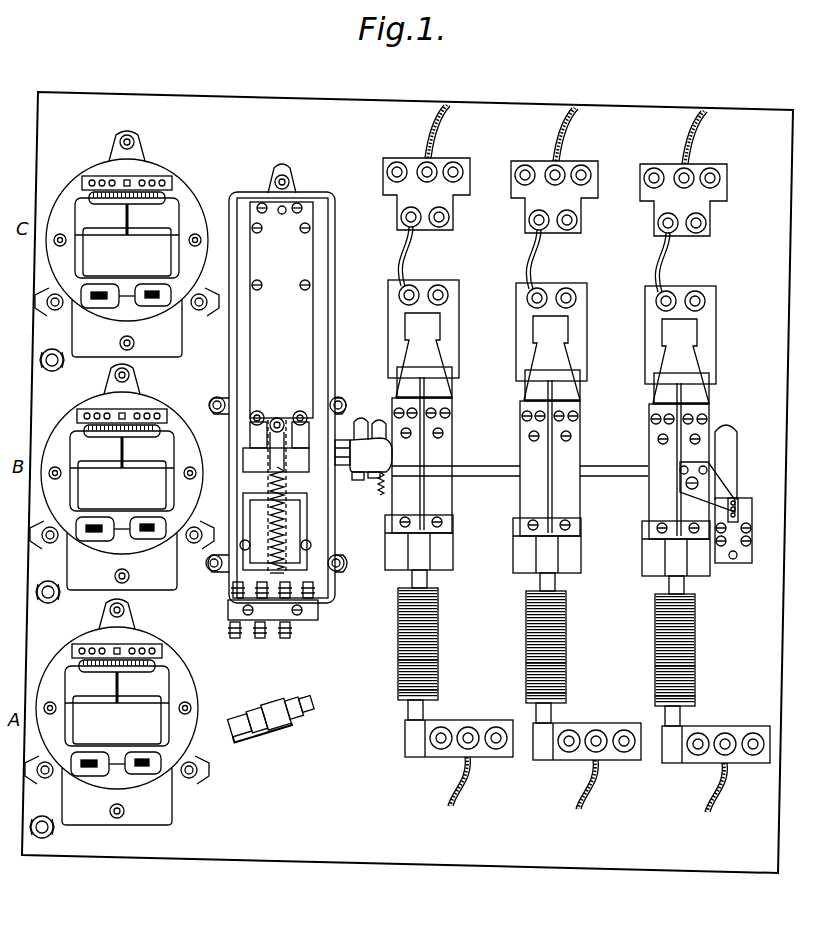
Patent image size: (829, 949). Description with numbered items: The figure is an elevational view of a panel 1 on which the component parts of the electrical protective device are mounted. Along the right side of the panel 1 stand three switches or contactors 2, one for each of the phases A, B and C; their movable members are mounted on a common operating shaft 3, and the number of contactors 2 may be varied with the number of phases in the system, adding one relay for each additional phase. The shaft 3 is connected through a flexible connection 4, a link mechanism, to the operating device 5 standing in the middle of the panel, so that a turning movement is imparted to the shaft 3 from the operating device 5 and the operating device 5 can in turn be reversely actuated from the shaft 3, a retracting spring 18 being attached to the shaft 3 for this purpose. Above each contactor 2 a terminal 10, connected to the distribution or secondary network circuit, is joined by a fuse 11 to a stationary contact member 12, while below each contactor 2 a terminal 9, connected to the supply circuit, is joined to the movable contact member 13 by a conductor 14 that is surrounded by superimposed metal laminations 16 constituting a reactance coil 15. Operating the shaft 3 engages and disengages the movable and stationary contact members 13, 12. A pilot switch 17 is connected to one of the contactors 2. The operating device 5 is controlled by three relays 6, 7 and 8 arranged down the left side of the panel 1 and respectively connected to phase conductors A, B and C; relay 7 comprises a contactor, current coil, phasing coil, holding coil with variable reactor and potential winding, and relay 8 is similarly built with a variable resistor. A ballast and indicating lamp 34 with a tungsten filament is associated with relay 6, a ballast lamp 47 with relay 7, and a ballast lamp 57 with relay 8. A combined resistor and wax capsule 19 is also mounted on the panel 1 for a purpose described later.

The panel 1 is at (364, 864).
The contactors 2 is at (454, 419).
The operating shaft 3 is at (478, 477).
The flexible connection 4 is at (368, 474).
The operating device 5 is at (323, 338).
The relay 6 is at (194, 677).
The relay 7 is at (170, 405).
The relay 8 is at (194, 197).
The terminals 9 is at (465, 721).
The terminals 10 is at (466, 161).
The fuses 11 is at (414, 267).
The stationary contact members 12 is at (460, 333).
The movable contact members 13 is at (436, 393).
The conductors 14 is at (428, 582).
The reactance coils 15 is at (438, 644).
The laminations 16 is at (430, 674).
The pilot switch 17 is at (752, 520).
The retracting spring 18 is at (381, 494).
The combined resistor and wax capsule 19 is at (274, 712).
The ballast and indicating lamp 34 is at (52, 832).
The ballast lamp 47 is at (58, 598).
The ballast lamp 57 is at (62, 366).